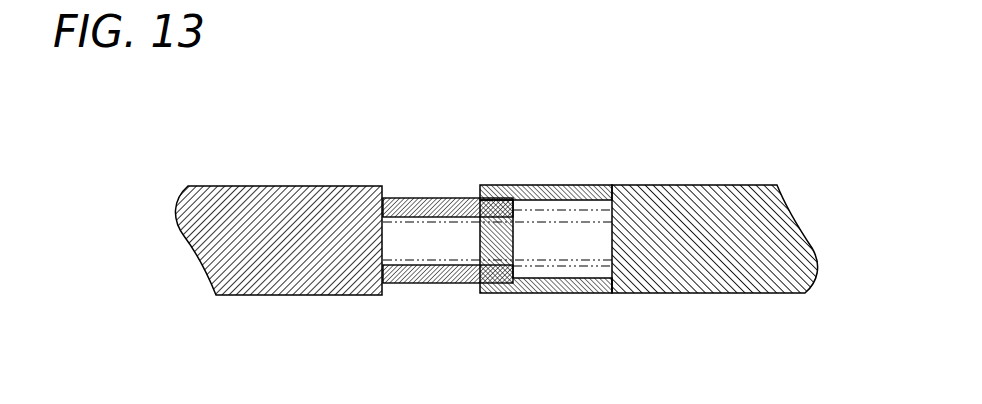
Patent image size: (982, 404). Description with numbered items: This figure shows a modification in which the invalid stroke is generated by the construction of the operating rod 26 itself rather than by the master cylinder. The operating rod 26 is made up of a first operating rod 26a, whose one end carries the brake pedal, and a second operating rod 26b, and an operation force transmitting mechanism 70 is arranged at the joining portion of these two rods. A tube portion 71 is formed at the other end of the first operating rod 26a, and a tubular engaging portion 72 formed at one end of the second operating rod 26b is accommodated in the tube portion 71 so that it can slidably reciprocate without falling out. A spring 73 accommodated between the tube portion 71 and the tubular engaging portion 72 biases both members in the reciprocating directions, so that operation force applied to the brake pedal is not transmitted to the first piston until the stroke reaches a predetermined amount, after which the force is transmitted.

The operating rod 26 is at (496, 251).
The first operating rod 26a is at (652, 294).
The second operating rod 26b is at (310, 294).
The operation force transmitting mechanism 70 is at (499, 235).
The tube portion 71 is at (547, 294).
The tubular engaging portion 72 is at (443, 284).
The spring 73 is at (548, 183).